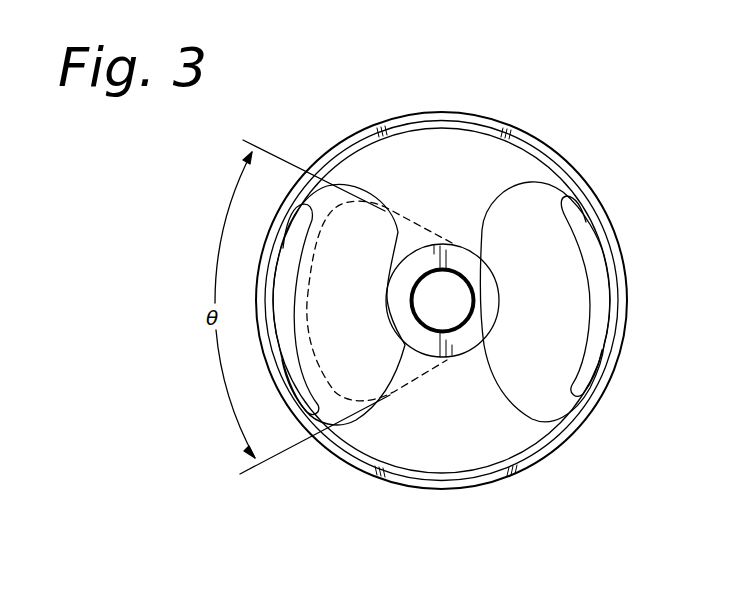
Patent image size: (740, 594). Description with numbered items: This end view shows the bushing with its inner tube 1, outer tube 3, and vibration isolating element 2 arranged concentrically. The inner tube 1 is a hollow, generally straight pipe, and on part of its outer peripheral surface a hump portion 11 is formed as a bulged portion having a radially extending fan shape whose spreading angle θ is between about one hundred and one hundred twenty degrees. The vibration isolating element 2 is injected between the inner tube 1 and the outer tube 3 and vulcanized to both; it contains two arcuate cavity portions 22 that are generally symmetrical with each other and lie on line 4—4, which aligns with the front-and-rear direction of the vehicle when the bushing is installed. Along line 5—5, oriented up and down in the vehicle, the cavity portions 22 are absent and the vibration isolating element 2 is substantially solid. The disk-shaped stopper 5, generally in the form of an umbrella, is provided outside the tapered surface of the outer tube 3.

The inner tube 1 is at (463, 360).
The vibration isolating element 2 is at (503, 452).
The outer tube 3 is at (553, 437).
The line 4— 4 is at (200, 298).
The stopper 5 is at (441, 97).
The hump portion 11 is at (418, 378).
The cavity portions 22 is at (291, 380).